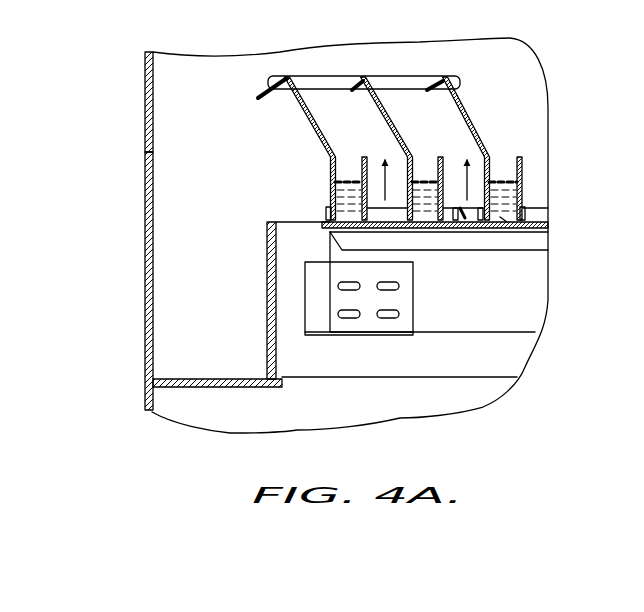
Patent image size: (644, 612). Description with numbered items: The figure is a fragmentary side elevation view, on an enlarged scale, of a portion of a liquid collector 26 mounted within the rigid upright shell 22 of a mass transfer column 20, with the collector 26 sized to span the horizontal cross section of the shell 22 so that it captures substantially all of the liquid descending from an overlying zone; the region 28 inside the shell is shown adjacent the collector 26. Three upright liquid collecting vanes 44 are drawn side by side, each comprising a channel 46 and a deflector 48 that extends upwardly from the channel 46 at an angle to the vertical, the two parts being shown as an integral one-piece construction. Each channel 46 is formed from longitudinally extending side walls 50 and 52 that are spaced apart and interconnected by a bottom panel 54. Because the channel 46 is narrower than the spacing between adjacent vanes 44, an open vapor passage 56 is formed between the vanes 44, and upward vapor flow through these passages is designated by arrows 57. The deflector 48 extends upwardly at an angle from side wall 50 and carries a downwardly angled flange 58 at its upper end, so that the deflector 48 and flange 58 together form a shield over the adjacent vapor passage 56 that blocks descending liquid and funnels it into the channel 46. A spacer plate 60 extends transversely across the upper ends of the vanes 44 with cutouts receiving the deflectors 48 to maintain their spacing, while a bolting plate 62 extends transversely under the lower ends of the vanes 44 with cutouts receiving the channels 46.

The column 20 is at (144, 74).
The shell 22 is at (145, 156).
The collector 26 is at (550, 268).
The interior space 28 is at (225, 291).
The liquid collecting vane 44 is at (480, 125).
The channel 46 is at (504, 177).
The deflector 48 is at (461, 103).
The side wall 50 is at (480, 210).
The side wall 52 is at (523, 170).
The bottom panel 54 is at (502, 217).
The vapor passage 56 is at (457, 210).
The arrows 57 is at (462, 178).
The flange 58 is at (432, 94).
The spacer plate 60 is at (400, 80).
The bolting plate 62 is at (538, 213).